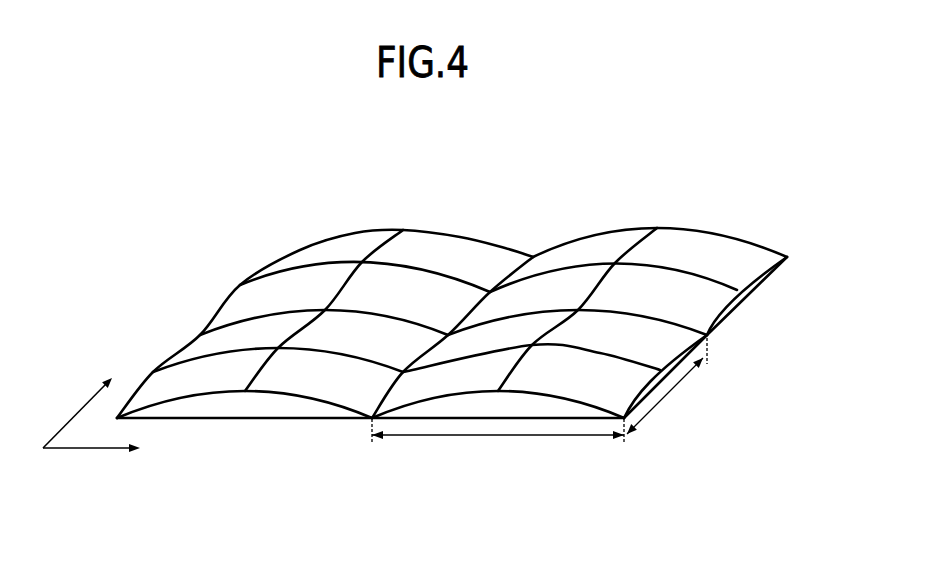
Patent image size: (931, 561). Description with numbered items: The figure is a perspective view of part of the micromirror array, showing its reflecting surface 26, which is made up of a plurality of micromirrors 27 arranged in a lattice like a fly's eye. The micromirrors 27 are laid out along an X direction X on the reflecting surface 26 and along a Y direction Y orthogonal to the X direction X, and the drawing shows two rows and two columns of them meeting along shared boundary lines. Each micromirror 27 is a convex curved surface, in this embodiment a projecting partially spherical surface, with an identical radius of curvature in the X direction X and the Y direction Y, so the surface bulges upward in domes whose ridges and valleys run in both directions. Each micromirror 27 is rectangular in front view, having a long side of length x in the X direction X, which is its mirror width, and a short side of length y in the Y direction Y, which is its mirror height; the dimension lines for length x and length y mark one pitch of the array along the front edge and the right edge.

The reflecting surface 26 is at (452, 270).
The micromirror 27 is at (615, 327).
The length x is at (496, 437).
The length y is at (668, 396).
The X direction X is at (98, 451).
The Y direction Y is at (83, 406).